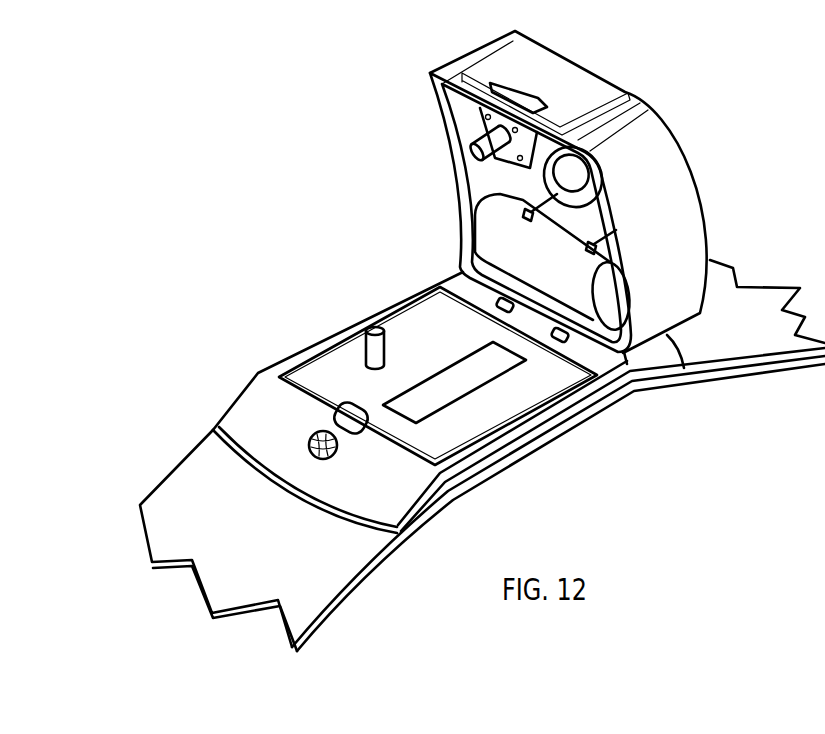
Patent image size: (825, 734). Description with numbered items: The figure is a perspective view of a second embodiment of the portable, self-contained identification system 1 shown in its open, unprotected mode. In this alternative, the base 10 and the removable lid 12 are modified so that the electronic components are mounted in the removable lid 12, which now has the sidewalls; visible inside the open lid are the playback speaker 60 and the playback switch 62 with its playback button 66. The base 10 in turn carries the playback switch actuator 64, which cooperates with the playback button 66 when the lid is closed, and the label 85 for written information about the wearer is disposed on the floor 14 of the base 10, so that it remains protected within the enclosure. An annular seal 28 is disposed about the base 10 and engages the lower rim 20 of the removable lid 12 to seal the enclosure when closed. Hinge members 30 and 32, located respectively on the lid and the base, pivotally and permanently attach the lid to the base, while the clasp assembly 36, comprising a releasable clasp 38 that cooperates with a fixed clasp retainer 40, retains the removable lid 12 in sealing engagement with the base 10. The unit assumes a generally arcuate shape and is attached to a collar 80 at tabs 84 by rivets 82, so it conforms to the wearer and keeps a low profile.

The identification system 1 is at (296, 142).
The base 10 is at (444, 442).
The removable lid 12 is at (690, 243).
The floor 14 is at (543, 342).
The rim 20 is at (598, 218).
The annular seal 28 is at (480, 440).
The hinge member 30 is at (541, 325).
The hinge member 32 is at (572, 346).
The clasp assembly 36 is at (333, 413).
The releasable clasp 38 is at (345, 400).
The clasp retainer 40 is at (520, 88).
The playback speaker 60 is at (574, 185).
The playback switch 62 is at (483, 118).
The playback switch actuator 64 is at (373, 328).
The playback button 66 is at (472, 153).
The collar 80 is at (313, 602).
The rivets 82 is at (322, 461).
The tabs 84 is at (232, 426).
The label 85 is at (465, 372).